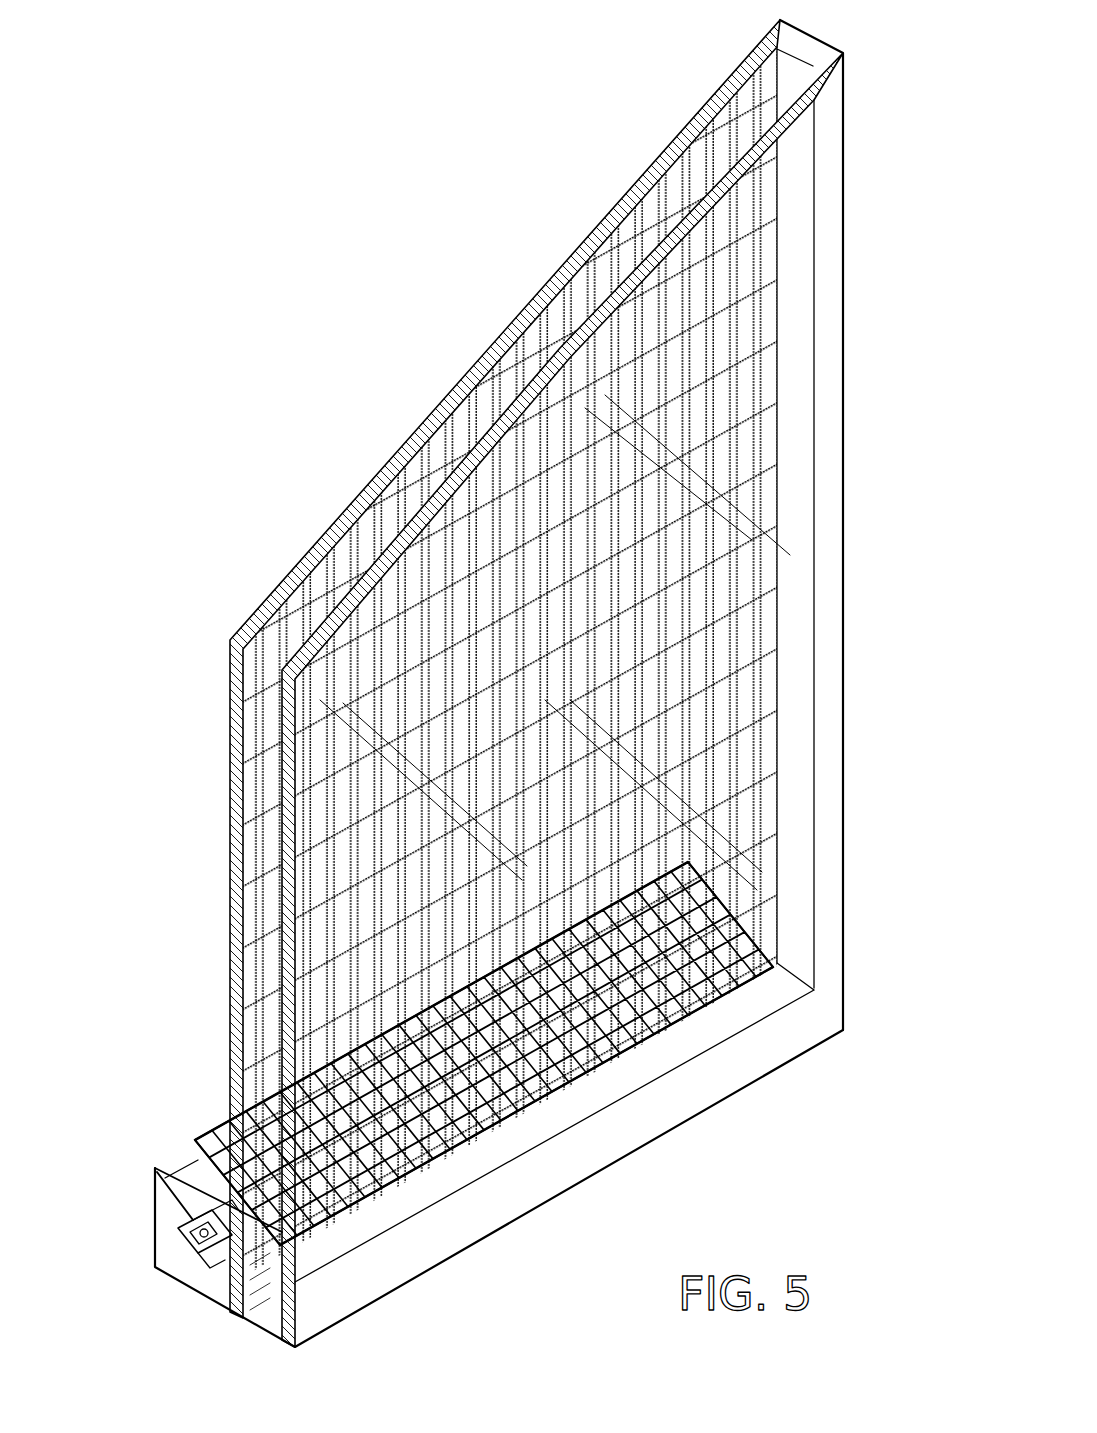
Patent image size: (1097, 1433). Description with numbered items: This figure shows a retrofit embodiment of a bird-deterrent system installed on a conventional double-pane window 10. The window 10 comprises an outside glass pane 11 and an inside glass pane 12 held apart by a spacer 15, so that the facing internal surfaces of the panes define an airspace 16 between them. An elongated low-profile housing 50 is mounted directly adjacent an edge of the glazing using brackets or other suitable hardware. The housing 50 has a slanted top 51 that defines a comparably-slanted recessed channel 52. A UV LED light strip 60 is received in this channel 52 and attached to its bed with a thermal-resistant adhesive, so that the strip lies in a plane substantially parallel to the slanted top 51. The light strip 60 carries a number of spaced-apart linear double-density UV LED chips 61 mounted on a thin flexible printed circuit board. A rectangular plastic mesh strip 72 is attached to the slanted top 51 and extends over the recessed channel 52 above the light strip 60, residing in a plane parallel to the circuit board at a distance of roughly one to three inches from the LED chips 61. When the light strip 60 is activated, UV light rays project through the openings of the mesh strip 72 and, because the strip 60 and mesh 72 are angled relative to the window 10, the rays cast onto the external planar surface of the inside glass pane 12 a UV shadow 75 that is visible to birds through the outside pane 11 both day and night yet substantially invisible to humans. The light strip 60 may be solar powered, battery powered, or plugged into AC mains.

The double-pane window 10 is at (888, 124).
The outside glass pane 11 is at (430, 513).
The inside glass pane 12 is at (312, 553).
The spacer 15 is at (257, 1308).
The airspace 16 is at (500, 368).
The housing 50 is at (165, 1203).
The slanted top 51 is at (170, 1165).
The recessed channel 52 is at (213, 1210).
The UV LED light strip 60 is at (187, 1228).
The UV LED chips 61 is at (203, 1252).
The plastic mesh strip 72 is at (221, 1190).
The UV shadow 75 is at (570, 567).